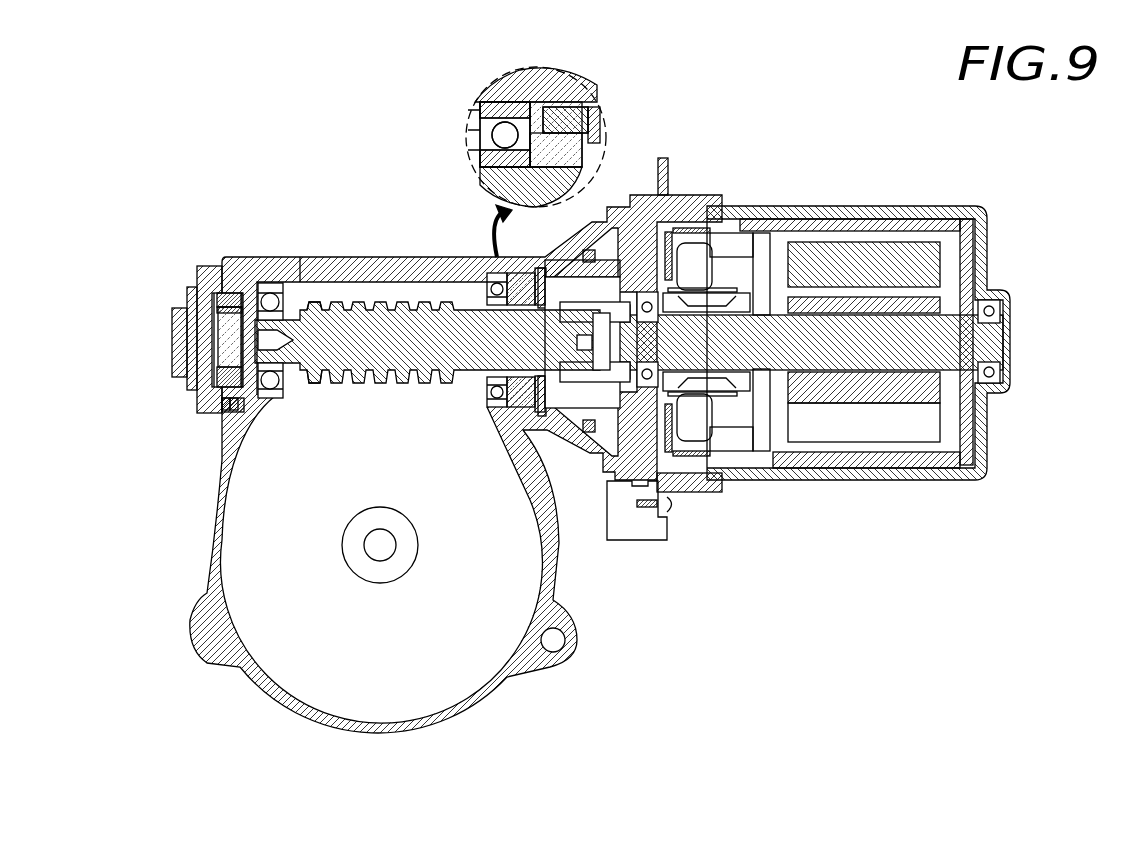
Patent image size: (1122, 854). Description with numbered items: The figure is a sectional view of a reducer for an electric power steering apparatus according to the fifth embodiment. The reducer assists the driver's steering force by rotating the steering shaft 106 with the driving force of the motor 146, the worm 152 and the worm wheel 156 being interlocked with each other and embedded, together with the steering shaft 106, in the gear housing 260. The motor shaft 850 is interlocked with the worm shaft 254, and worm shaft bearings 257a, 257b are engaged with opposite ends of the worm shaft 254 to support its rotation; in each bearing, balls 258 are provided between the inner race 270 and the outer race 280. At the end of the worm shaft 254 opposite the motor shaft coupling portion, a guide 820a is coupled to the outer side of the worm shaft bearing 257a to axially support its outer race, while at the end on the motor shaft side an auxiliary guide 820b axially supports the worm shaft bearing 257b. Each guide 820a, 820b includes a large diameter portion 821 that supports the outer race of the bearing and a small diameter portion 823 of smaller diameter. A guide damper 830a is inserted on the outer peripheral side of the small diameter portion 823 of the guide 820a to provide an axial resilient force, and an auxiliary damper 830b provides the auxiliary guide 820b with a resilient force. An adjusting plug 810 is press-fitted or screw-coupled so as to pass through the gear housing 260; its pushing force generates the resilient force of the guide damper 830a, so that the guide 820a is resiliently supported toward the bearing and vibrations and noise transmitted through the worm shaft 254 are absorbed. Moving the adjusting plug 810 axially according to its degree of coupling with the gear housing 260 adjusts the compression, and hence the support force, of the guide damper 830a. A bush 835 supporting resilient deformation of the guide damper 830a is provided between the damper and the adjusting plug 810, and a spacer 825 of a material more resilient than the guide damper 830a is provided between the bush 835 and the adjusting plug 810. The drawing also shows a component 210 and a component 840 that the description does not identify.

The steering shaft 106 is at (380, 547).
The motor 146 is at (803, 207).
The worm 152 is at (333, 258).
The worm wheel 156 is at (472, 665).
The connector bracket 210 is at (575, 415).
The worm shaft 254 is at (390, 340).
The worm shaft bearing 257a is at (322, 300).
The worm shaft bearing 257b is at (380, 62).
The balls 258 is at (478, 137).
The gear housing 260 is at (423, 262).
The inner race 270 is at (478, 157).
The outer race 280 is at (478, 108).
The adjusting plug 810 is at (178, 335).
The guide 820a is at (108, 440).
The auxiliary guide 820b is at (684, 57).
The large diameter portion 821 is at (580, 108).
The small diameter portion 823 is at (567, 155).
The spacer 825 is at (215, 293).
The guide damper 830a is at (270, 300).
The auxiliary damper 830b is at (553, 102).
The bush 835 is at (232, 365).
The end cap 840 is at (197, 270).
The motor shaft 850 is at (762, 355).